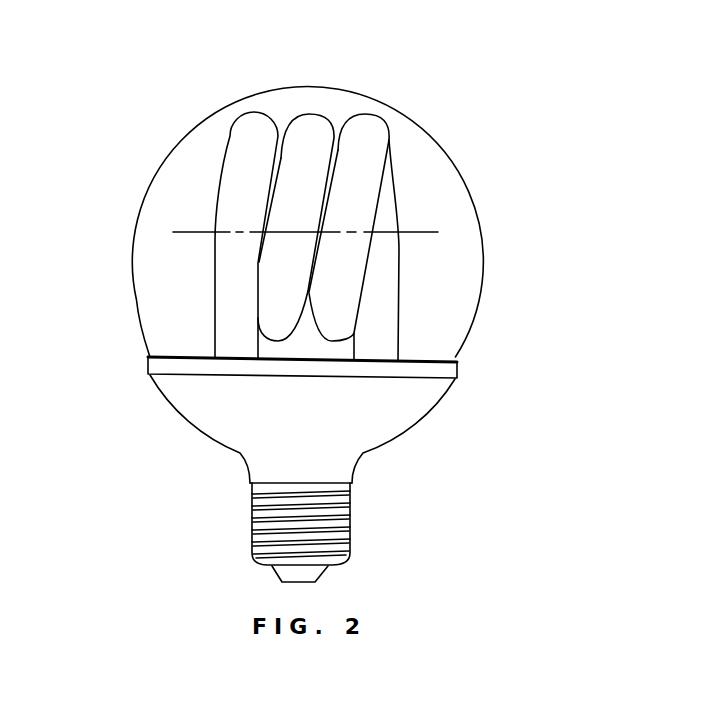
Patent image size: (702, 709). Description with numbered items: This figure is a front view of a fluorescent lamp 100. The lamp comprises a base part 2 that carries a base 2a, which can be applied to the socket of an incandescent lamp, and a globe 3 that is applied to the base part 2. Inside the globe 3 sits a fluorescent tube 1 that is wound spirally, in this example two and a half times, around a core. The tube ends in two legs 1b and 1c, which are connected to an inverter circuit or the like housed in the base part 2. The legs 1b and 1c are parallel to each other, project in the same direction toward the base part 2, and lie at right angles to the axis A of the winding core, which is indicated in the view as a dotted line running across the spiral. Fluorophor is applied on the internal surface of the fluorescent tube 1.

The fluorescent lamp 100 is at (150, 176).
The fluorescent tube 1 is at (257, 138).
The leg 1b is at (378, 336).
The leg 1c is at (232, 336).
The base part 2 is at (393, 413).
The base 2a is at (347, 512).
The globe 3 is at (477, 213).
The axis A is at (413, 232).